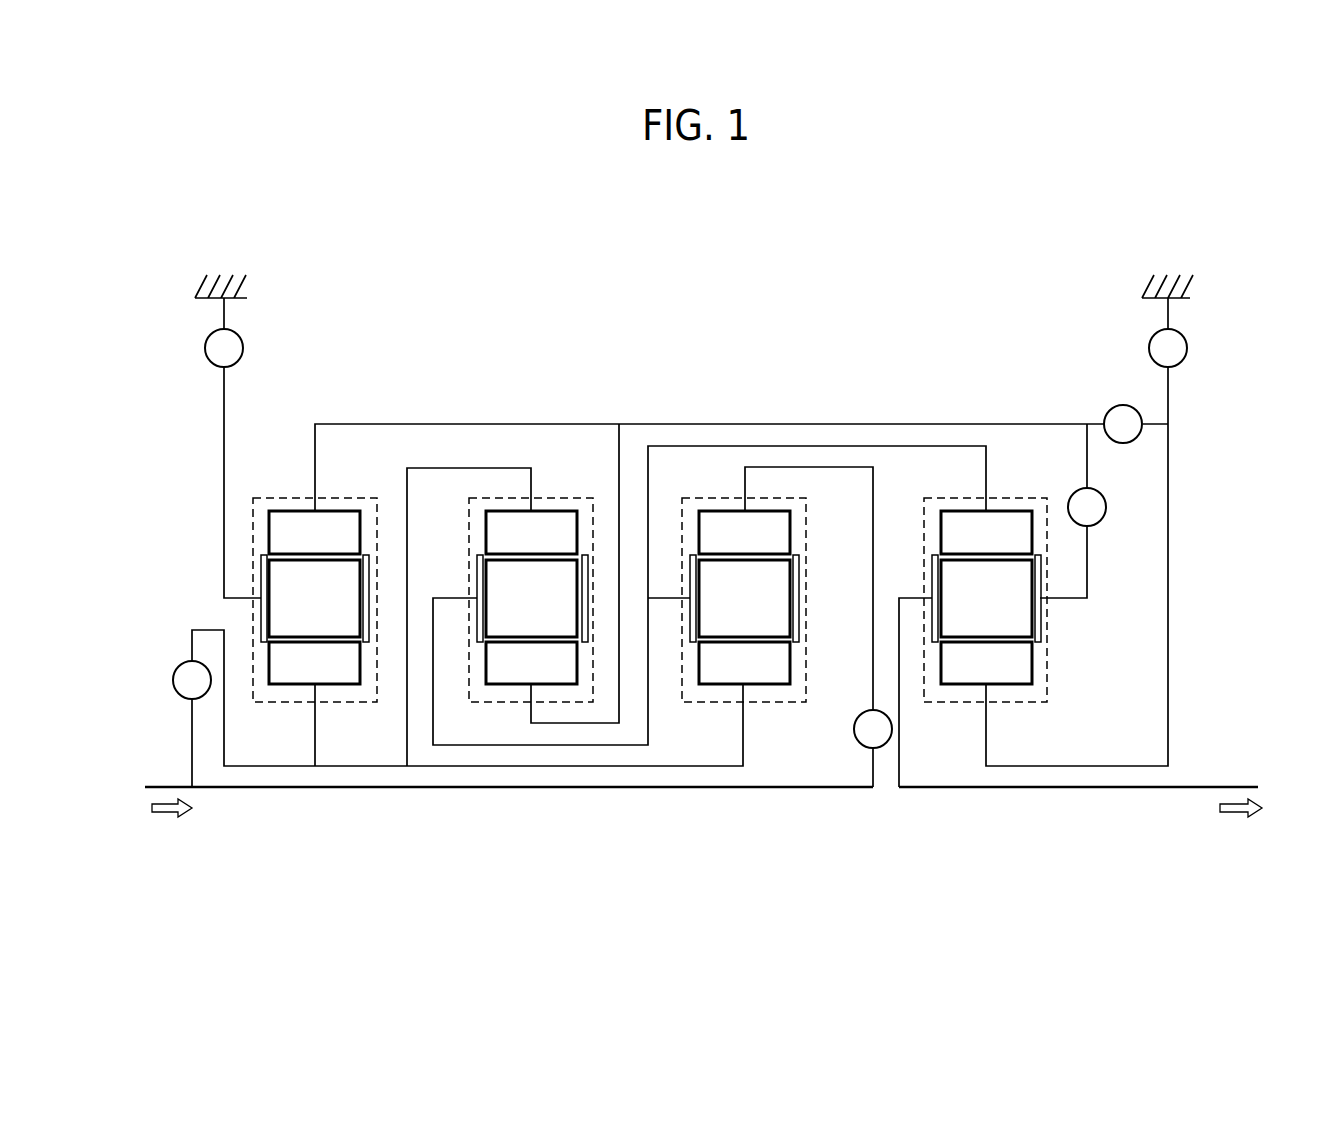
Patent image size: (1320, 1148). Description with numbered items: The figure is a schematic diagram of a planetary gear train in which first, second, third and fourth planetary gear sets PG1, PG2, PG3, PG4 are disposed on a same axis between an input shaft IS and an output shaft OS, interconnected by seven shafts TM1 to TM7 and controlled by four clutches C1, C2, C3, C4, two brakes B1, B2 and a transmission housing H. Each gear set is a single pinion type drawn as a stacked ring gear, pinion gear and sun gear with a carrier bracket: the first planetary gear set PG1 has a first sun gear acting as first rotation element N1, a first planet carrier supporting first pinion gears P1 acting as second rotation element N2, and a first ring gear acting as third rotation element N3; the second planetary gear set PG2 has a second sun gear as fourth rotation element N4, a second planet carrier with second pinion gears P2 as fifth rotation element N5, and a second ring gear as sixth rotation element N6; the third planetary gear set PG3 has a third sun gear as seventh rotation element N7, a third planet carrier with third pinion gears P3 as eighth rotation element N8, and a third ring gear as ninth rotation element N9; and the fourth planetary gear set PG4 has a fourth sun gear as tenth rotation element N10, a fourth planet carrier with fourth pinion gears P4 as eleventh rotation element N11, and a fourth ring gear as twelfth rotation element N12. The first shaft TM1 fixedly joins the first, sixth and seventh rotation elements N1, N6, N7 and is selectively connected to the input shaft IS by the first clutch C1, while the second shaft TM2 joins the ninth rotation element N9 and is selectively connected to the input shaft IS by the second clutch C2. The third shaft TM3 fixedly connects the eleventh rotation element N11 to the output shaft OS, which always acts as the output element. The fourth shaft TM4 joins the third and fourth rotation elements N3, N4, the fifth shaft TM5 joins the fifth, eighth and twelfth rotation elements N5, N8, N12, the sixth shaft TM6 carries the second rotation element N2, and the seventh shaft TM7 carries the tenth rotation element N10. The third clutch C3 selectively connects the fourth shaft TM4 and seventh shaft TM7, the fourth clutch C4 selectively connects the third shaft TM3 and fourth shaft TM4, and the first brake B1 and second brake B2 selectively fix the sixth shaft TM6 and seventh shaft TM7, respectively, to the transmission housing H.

The transmission housing H is at (215, 284).
The first brake B1 is at (224, 332).
The second brake B2 is at (1168, 332).
The first clutch C1 is at (192, 680).
The second clutch C2 is at (873, 729).
The third clutch C3 is at (1123, 424).
The fourth clutch C4 is at (1087, 507).
The first shaft TM1 is at (432, 768).
The second shaft TM2 is at (812, 467).
The third shaft TM3 is at (1087, 562).
The fourth shaft TM4 is at (558, 424).
The fifth shaft TM5 is at (700, 446).
The sixth shaft TM6 is at (224, 385).
The seventh shaft TM7 is at (1168, 480).
The input shaft IS is at (164, 784).
The output shaft OS is at (1240, 784).
The first planetary gear set PG1 is at (308, 644).
The second planetary gear set PG2 is at (500, 688).
The third planetary gear set PG3 is at (774, 688).
The fourth planetary gear set PG4 is at (1017, 688).
The first rotation element N1 is at (314, 663).
The second rotation element N2 is at (304, 526).
The third rotation element N3 is at (314, 532).
The fourth rotation element N4 is at (531, 663).
The fifth rotation element N5 is at (477, 565).
The sixth rotation element N6 is at (531, 532).
The seventh rotation element N7 is at (744, 663).
The eighth rotation element N8 is at (800, 565).
The ninth rotation element N9 is at (744, 532).
The tenth rotation element N10 is at (986, 663).
The eleventh rotation element N11 is at (1041, 630).
The twelfth rotation element N12 is at (986, 532).
The first pinion gears P1 is at (314, 598).
The second pinion gears P2 is at (531, 598).
The third pinion gears P3 is at (744, 598).
The fourth pinion gears P4 is at (986, 598).